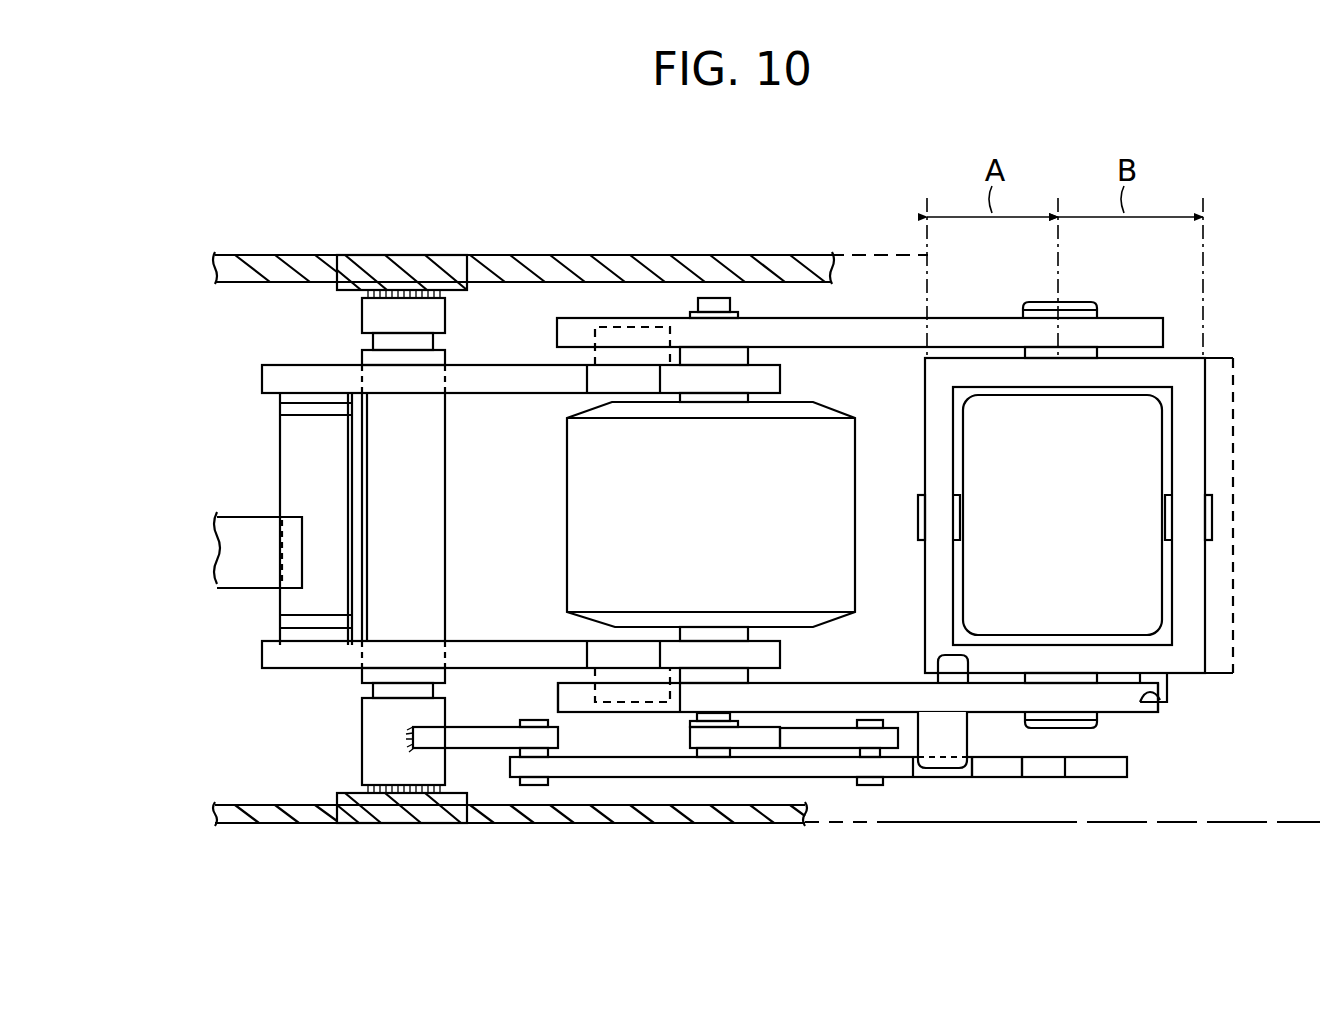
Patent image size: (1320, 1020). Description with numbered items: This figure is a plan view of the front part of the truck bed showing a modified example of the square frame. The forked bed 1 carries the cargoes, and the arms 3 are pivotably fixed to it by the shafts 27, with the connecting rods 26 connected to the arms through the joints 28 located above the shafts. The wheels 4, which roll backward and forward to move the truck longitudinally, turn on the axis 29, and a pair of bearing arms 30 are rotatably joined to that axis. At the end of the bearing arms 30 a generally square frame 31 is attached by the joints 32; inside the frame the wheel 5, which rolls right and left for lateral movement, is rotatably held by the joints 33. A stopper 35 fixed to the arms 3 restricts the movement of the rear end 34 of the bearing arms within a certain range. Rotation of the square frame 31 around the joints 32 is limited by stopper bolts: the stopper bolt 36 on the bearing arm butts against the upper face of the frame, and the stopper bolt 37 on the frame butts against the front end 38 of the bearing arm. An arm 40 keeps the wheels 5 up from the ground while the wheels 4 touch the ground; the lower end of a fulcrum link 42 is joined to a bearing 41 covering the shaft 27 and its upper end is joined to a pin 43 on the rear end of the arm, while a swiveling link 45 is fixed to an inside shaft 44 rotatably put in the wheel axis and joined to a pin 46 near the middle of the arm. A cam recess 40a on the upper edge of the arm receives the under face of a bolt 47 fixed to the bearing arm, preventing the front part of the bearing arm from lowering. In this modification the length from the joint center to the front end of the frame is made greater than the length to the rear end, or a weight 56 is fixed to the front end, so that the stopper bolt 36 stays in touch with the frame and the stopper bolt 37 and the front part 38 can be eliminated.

The forked bed 1 is at (288, 262).
The arms 3 is at (487, 385).
The wheels 4 is at (567, 487).
The wheel 5 is at (967, 397).
The connecting rod 26 is at (230, 546).
The shaft 27 is at (382, 342).
The joint 28 is at (305, 460).
The axis 29 is at (735, 355).
The bearing arm 30 is at (843, 328).
The square frame 31 is at (935, 415).
The joint 32 is at (1078, 308).
The joint 33 is at (916, 520).
The rear end of the bearing arm 34 is at (574, 693).
The stopper 35 is at (597, 352).
The stopper bolt 36 is at (950, 655).
The stopper bolt 37 is at (1168, 683).
The front end of the bearing arm 38 is at (1144, 714).
The arm 40 is at (612, 778).
The cam recess 40a is at (1005, 776).
The bearing 41 is at (372, 315).
The fulcrum link 42 is at (487, 738).
The pin 43 is at (538, 785).
The inside shaft 44 is at (705, 298).
The swiveling link 45 is at (772, 748).
The pin 46 is at (870, 785).
The bolt 47 is at (940, 770).
The weight 56 is at (1233, 370).